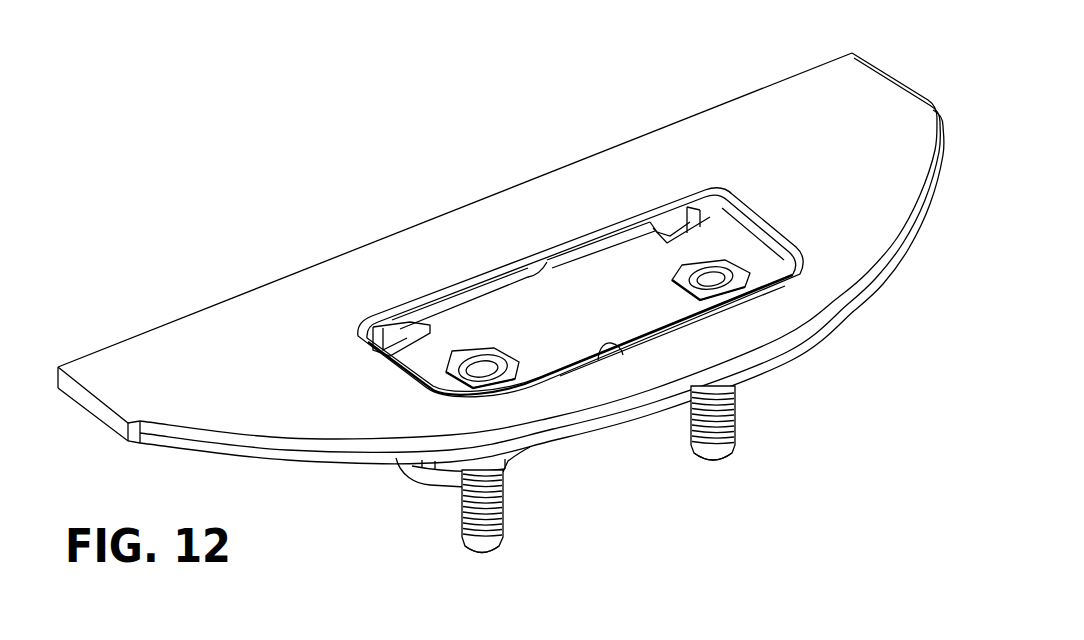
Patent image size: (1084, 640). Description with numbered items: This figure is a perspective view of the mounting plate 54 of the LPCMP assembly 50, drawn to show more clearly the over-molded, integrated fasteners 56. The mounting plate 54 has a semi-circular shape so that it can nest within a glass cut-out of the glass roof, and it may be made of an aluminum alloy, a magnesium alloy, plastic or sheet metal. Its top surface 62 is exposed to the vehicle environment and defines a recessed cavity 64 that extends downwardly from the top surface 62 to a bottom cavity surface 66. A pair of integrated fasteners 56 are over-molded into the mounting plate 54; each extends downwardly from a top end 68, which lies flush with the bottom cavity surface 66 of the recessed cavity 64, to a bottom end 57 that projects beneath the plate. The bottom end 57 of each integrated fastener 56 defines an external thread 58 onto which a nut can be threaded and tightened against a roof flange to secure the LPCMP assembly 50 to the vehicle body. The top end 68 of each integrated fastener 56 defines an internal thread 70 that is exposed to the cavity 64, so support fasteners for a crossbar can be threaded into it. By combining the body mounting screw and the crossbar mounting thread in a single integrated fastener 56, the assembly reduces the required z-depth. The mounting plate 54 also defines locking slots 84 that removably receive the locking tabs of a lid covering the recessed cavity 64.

The LPCMP assembly 50 is at (875, 47).
The mounting plate 54 is at (813, 68).
The integrated fastener 56 is at (508, 355).
The bottom end 57 is at (482, 555).
The external thread 58 is at (505, 505).
The top surface 62 is at (893, 113).
The recessed cavity 64 is at (531, 268).
The bottom cavity surface 66 is at (610, 278).
The top end 68 is at (452, 366).
The internal thread 70 is at (745, 284).
The locking slot 84 is at (606, 356).